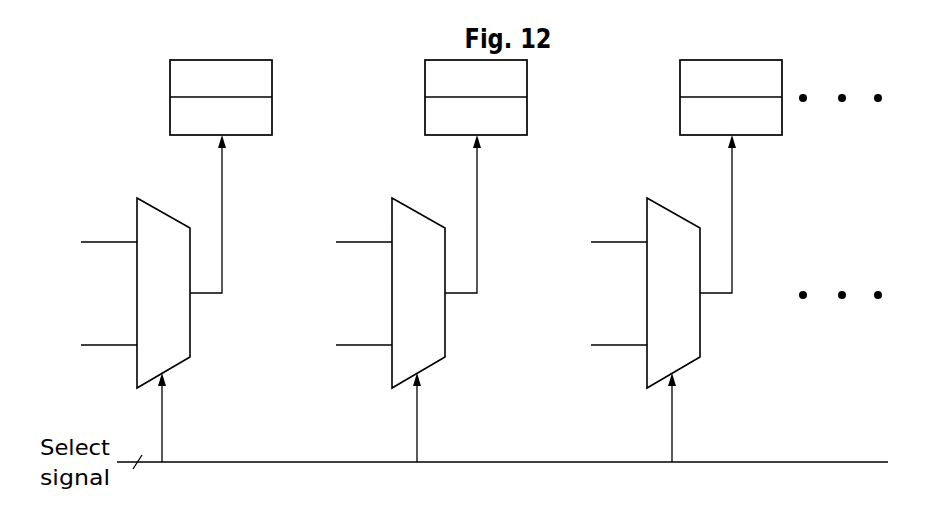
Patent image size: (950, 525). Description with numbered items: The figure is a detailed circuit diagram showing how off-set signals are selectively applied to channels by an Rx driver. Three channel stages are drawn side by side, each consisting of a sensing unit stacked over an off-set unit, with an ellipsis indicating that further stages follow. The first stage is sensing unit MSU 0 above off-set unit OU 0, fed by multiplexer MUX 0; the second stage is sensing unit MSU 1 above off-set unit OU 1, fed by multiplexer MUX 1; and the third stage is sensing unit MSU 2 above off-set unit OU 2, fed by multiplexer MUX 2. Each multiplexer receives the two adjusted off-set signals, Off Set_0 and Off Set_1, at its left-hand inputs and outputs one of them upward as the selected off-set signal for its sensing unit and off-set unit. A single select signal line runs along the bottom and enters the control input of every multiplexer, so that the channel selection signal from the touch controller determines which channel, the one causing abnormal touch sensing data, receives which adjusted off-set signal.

The memory storage unit 0 (MSU0/OU0) with multiplexer MUX_ 0 is at (151, 261).
The memory storage unit 1 (MSU1/OU1) with multiplexer MUX_ 1 is at (406, 261).
The memory storage unit 2 (MSU2/OU2) with multiplexer MUX_ 2 is at (661, 261).